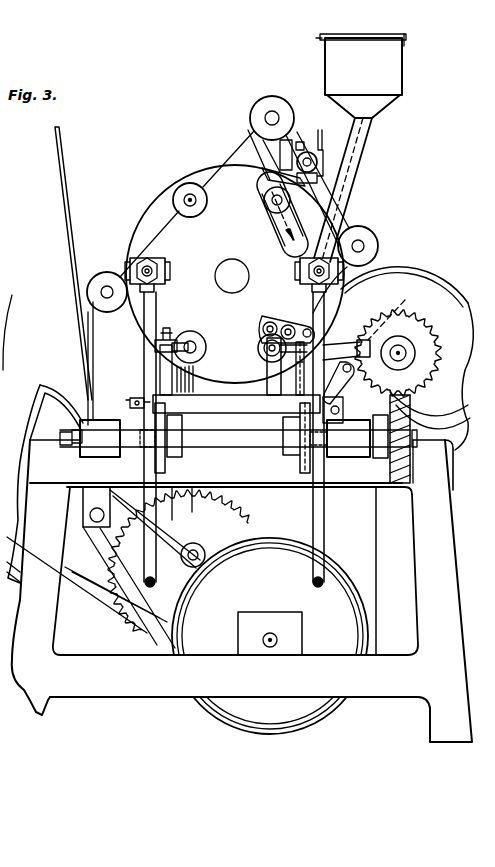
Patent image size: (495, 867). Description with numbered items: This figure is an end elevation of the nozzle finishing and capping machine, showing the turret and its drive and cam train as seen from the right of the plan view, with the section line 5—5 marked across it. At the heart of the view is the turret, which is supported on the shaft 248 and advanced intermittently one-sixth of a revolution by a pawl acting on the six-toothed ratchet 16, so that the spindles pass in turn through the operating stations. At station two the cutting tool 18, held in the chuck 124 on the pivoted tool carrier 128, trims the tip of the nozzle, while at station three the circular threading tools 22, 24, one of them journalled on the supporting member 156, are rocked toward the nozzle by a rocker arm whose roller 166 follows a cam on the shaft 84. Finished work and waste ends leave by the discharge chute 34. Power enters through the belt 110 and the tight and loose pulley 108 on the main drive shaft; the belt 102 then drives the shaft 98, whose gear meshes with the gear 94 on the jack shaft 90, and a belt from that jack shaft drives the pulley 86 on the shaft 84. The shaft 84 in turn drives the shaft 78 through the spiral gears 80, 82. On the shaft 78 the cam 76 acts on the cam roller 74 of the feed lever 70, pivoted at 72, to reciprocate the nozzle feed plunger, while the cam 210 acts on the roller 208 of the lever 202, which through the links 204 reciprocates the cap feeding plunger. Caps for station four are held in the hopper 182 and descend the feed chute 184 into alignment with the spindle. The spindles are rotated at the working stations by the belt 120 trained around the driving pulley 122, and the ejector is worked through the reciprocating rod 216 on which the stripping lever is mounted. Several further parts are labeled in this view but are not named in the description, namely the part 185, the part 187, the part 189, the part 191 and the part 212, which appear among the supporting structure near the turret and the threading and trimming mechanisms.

The section line 5— 5 is at (230, 150).
The six-toothed ratchet 16 is at (174, 361).
The cutting tool 18 is at (195, 340).
The threading tool 22 is at (264, 326).
The threading tool 24 is at (273, 176).
The discharge chute 34 is at (282, 228).
The feed lever 70 is at (145, 338).
The pivot 72 is at (130, 400).
The cam roller 74 is at (148, 458).
The cam 76 is at (166, 462).
The shaft 78 is at (230, 452).
The spiral gear 80 is at (412, 432).
The spiral gear 82 is at (433, 338).
The shaft 84 is at (404, 345).
The pulley 86 is at (448, 444).
The jack shaft 90 is at (190, 566).
The gear 94 is at (255, 522).
The shaft 98 is at (272, 632).
The belt 102 is at (110, 590).
The tight and loose pulley 108 is at (52, 395).
The belt 110 is at (72, 197).
The belt 120 is at (275, 100).
The driving pulley 122 is at (292, 720).
The chuck 124 is at (378, 224).
The tool carrier 128 is at (102, 276).
The supporting member 156 is at (300, 324).
The roller 166 is at (346, 400).
The hopper 182 is at (361, 64).
The feed chute 184 is at (355, 155).
The support post 185 is at (270, 400).
The ratchet 187 is at (262, 345).
The rod 189 is at (298, 398).
The axis line 191 is at (397, 312).
The lever 202 is at (313, 313).
The links 204 is at (372, 258).
The roller 208 is at (322, 462).
The cam 210 is at (300, 460).
The bracket 212 is at (280, 165).
The reciprocating rod 216 is at (315, 152).
The shaft 248 is at (232, 276).